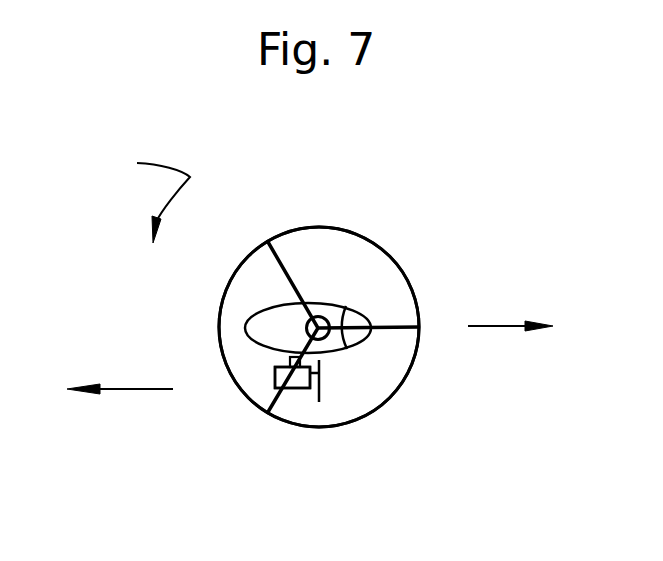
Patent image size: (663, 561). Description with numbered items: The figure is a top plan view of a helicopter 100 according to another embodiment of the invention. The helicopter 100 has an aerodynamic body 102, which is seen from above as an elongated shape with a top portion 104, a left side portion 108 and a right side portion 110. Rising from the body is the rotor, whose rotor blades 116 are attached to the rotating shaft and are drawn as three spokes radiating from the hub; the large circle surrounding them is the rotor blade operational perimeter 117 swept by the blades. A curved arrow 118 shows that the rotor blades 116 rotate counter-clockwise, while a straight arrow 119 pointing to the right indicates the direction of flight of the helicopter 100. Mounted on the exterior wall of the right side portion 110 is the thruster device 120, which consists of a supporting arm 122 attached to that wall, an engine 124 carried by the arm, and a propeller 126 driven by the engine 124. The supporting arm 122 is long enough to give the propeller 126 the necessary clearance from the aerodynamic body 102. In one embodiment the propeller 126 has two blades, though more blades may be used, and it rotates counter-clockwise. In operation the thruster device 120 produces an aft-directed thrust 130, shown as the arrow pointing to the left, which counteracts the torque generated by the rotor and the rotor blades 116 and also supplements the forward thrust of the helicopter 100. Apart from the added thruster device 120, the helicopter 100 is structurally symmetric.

The helicopter 100 is at (390, 192).
The aerodynamic body 102 is at (340, 304).
The top portion 104 is at (273, 323).
The left side portion 108 is at (312, 297).
The right side portion 110 is at (270, 355).
The rotor blades 116 is at (277, 265).
The rotor blade operational perimeter 117 is at (405, 273).
The arrow 118 is at (141, 198).
The arrow 119 is at (490, 326).
The thruster device 120 is at (298, 390).
The supporting arm 122 is at (290, 358).
The engine 124 is at (302, 390).
The propeller 126 is at (323, 391).
The aft-directed thrust 130 is at (132, 392).